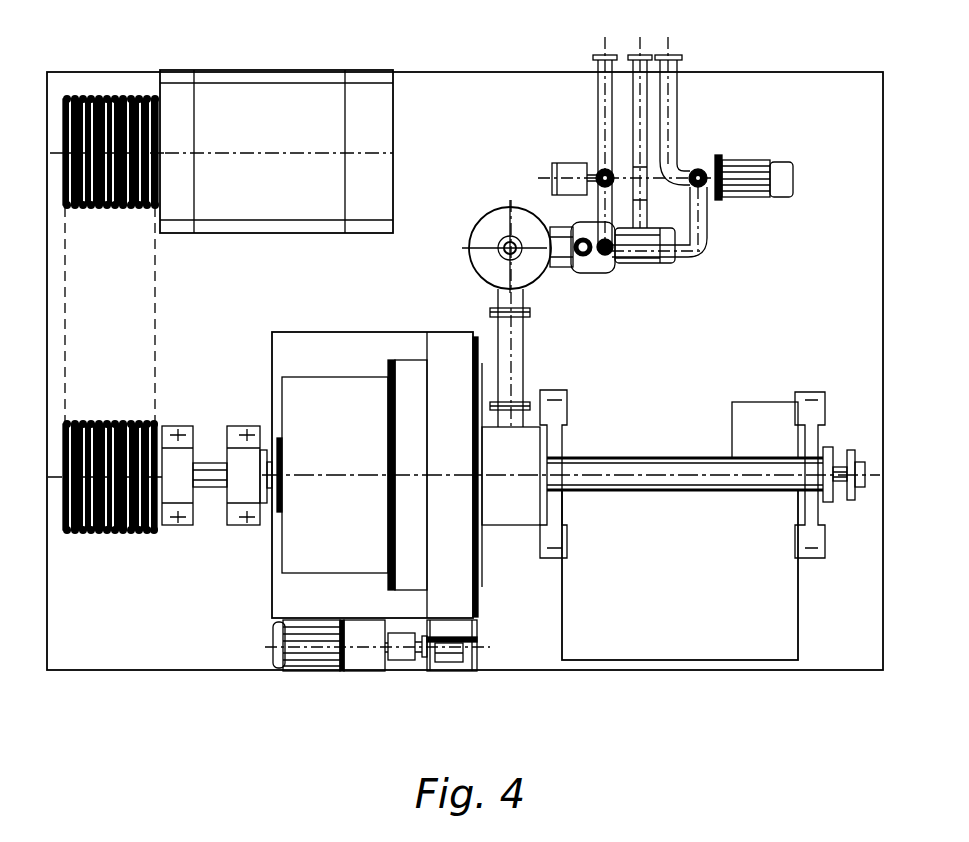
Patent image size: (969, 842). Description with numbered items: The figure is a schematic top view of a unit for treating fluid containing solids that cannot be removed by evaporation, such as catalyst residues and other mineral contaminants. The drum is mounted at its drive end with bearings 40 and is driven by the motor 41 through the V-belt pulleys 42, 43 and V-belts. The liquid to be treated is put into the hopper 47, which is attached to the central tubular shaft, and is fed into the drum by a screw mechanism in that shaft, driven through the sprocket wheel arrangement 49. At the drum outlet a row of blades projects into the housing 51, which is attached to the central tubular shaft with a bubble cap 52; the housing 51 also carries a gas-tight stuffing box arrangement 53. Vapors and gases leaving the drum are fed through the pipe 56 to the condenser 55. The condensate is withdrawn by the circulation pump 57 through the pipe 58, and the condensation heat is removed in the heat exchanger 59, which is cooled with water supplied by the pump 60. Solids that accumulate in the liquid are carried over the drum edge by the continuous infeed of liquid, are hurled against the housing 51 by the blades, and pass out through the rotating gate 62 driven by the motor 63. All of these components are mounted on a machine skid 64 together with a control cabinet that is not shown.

The bearings 40 is at (240, 428).
The motor 41 is at (254, 82).
The V-belt pulley 42 is at (110, 97).
The V-belt pulley 43 is at (118, 422).
The hopper 47 is at (650, 661).
The sprocket wheel arrangement 49 is at (850, 448).
The housing 51 is at (463, 598).
The bubble cap 52 is at (512, 518).
The gas-tight stuffing box arrangement 53 is at (410, 586).
The condenser 55 is at (535, 276).
The pipe 56 is at (524, 372).
The circulation pump 57 is at (666, 266).
The pipe 58 is at (597, 63).
The heat exchanger 59 is at (609, 273).
The pump 60 is at (700, 166).
The rotating gate 62 is at (462, 663).
The motor 63 is at (320, 669).
The machine skid 64 is at (160, 668).